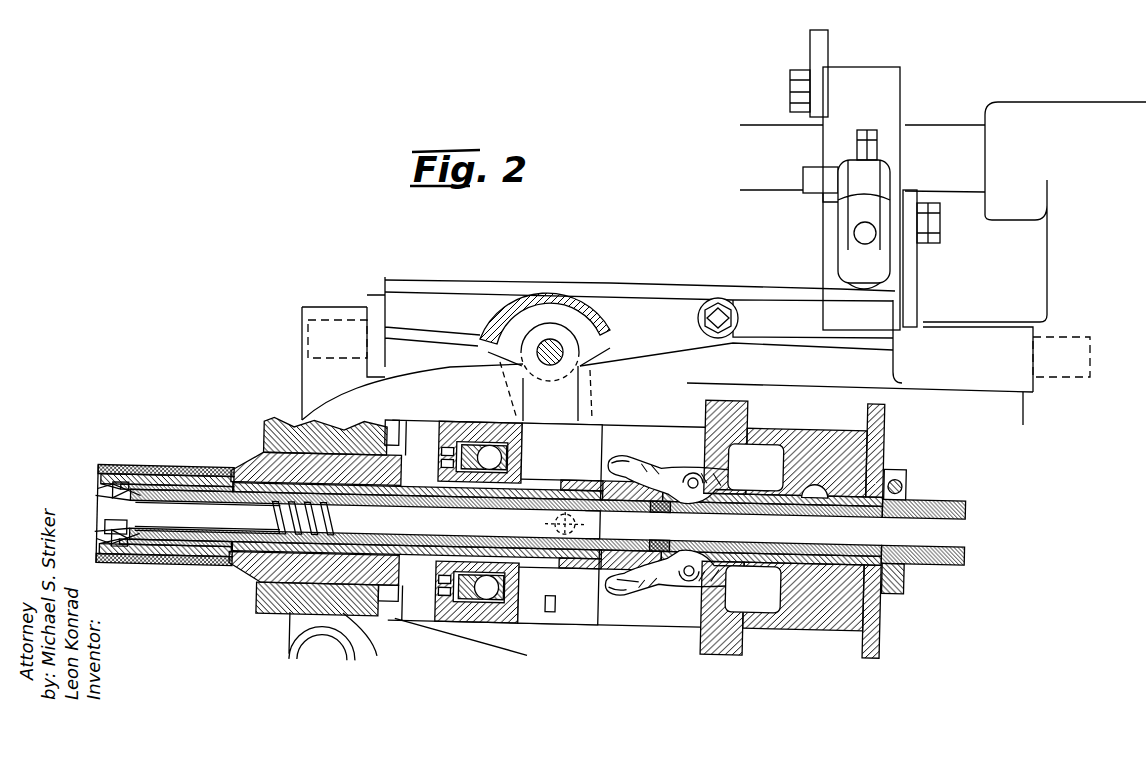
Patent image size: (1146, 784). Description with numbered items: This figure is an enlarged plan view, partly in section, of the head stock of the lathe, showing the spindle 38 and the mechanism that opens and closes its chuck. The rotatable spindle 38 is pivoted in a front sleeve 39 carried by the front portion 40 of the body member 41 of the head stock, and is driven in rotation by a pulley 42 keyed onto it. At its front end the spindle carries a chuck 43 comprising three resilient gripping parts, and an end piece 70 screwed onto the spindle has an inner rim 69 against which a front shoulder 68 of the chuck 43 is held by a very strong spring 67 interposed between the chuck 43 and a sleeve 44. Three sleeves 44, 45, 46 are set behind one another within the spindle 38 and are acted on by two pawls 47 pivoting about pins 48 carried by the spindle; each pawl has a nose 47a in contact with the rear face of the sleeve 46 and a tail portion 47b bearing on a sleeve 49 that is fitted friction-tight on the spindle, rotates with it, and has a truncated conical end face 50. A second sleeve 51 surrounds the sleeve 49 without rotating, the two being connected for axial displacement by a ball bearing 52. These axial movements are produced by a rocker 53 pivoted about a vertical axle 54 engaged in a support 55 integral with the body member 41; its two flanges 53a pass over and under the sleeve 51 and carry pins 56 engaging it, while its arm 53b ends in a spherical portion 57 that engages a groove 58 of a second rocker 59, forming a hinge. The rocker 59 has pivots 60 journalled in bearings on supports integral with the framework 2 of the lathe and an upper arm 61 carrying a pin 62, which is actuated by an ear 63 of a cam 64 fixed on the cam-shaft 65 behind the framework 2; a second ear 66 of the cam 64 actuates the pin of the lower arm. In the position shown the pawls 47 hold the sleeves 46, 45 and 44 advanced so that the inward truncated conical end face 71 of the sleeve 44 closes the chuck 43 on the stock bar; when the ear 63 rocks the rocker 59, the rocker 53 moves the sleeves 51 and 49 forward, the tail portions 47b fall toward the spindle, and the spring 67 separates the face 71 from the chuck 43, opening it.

The framework 2 is at (1033, 130).
The spindle 38 is at (207, 485).
The front sleeve 39 is at (232, 582).
The front portion 40 is at (290, 597).
The body member 41 is at (457, 385).
The pulley 42 is at (792, 616).
The chuck 43 is at (102, 560).
The sleeve 44 is at (166, 553).
The sleeve 45 is at (423, 553).
The sleeve 46 is at (668, 540).
The pawls 47 is at (652, 468).
The nose 47a is at (693, 492).
The tail portion 47b is at (621, 466).
The pins 48 is at (708, 500).
The sleeve 49 is at (594, 578).
The truncated conical end face 50 is at (636, 584).
The second sleeve 51 is at (513, 608).
The ball bearing 52 is at (488, 601).
The rocker 53 is at (520, 300).
The flanges 53a is at (553, 522).
The arm 53b is at (653, 312).
The vertical axle 54 is at (548, 339).
The support 55 is at (565, 330).
The pins 56 is at (590, 522).
The spherical portion 57 is at (718, 303).
The groove 58 is at (778, 312).
The rocker 59 is at (392, 284).
The pivots 60 is at (338, 305).
The upper arm 61 is at (855, 210).
The pin 62 is at (815, 178).
The ear 63 is at (820, 48).
The cam 64 is at (857, 83).
The cam-shaft 65 is at (937, 155).
The ear 66 is at (912, 312).
The spring 67 is at (268, 517).
The front shoulder 68 is at (122, 548).
The inner rim 69 is at (100, 471).
The end piece 70 is at (125, 475).
The truncated conical end face 71 is at (143, 483).